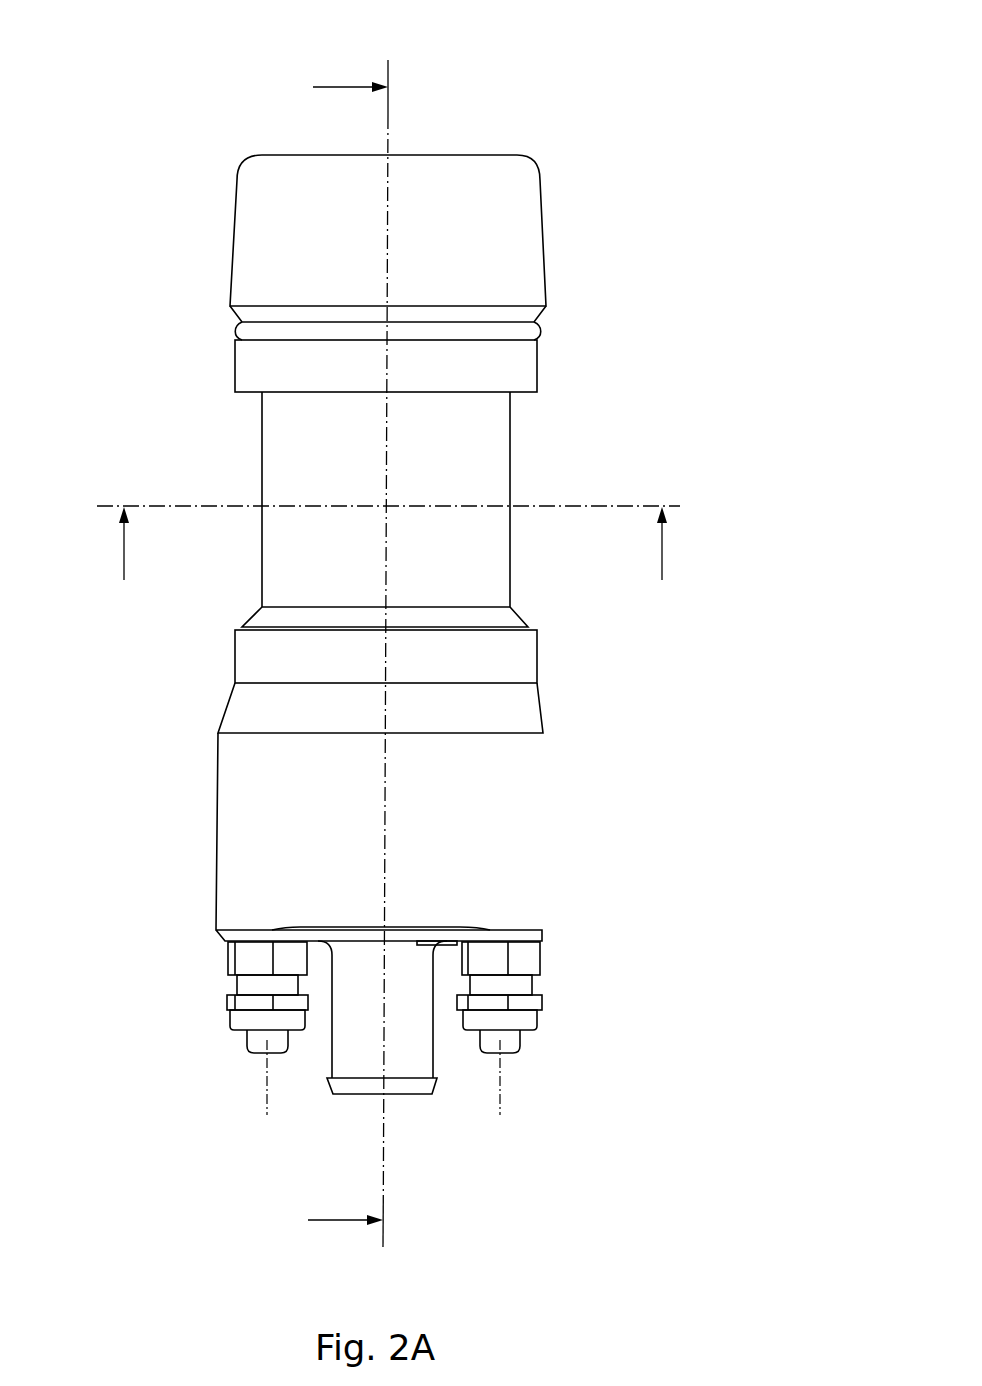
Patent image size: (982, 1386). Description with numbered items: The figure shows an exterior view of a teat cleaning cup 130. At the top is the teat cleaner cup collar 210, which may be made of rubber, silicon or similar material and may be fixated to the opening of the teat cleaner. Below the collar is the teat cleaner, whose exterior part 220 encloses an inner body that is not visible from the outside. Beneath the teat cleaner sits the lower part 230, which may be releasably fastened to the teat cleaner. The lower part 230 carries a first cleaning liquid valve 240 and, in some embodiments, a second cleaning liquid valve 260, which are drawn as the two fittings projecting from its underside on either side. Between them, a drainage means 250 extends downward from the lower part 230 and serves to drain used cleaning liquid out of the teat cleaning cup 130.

The teat cleaning cup 130 is at (722, 48).
The teat cleaner cup collar 210 is at (488, 230).
The exterior part 220 is at (488, 437).
The lower part 230 is at (478, 828).
The first cleaning liquid valve 240 is at (502, 1038).
The drainage means 250 is at (418, 1087).
The second cleaning liquid valve 260 is at (263, 1040).